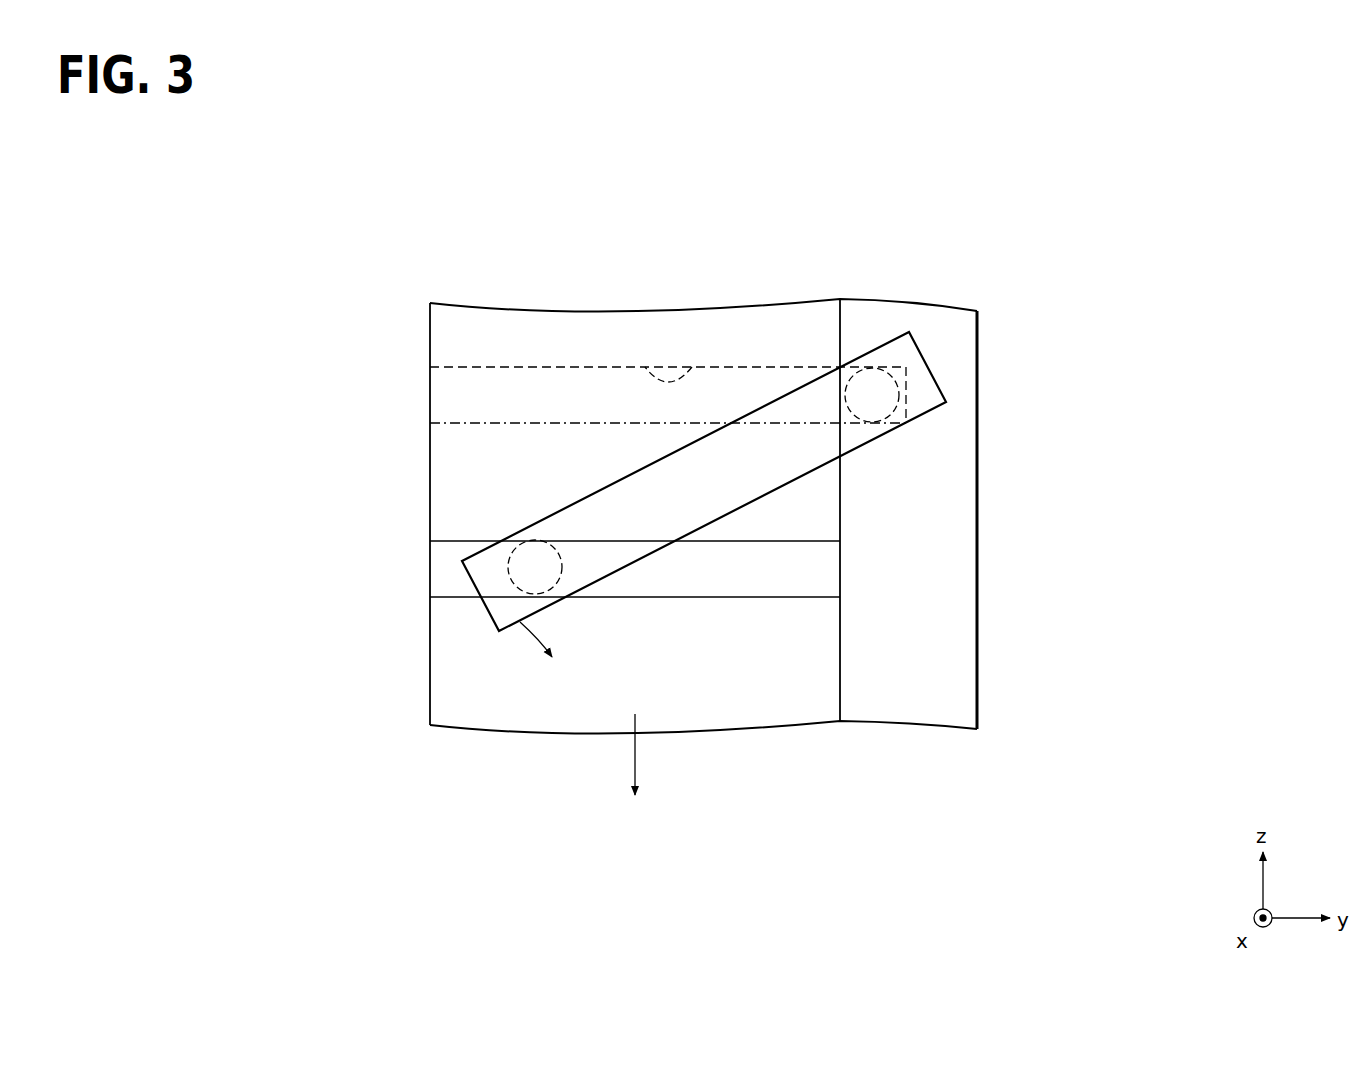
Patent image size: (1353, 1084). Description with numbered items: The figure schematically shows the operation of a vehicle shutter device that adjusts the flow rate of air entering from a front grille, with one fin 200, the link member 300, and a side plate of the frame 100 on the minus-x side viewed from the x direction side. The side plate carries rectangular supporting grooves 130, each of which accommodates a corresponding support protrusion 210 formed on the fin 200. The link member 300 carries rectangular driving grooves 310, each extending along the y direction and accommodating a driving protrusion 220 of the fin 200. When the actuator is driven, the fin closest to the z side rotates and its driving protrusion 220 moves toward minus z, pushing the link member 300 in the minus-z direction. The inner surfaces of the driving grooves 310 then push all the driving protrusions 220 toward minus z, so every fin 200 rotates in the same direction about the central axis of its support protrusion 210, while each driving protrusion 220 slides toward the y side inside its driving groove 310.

The frame 100 is at (813, 516).
The supporting groove 130 is at (692, 367).
The fin 200 is at (557, 512).
The support protrusion 210 is at (893, 393).
The driving protrusion 220 is at (518, 573).
The link member 300 is at (458, 683).
The driving groove 310 is at (785, 541).